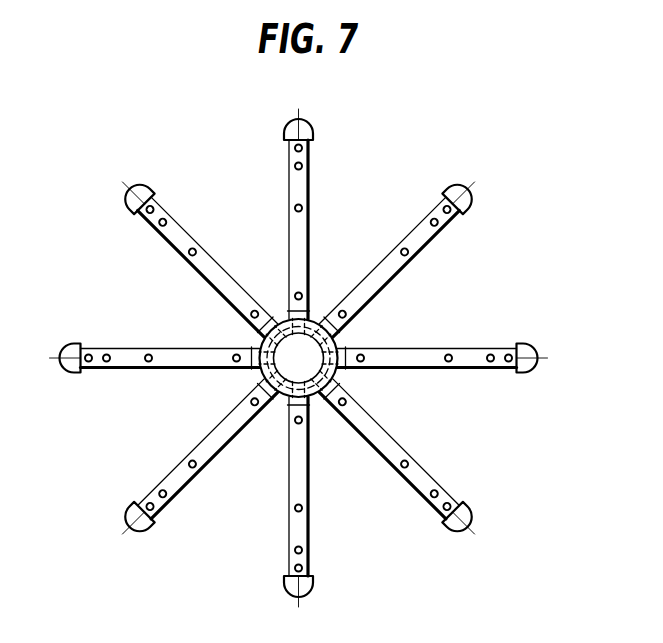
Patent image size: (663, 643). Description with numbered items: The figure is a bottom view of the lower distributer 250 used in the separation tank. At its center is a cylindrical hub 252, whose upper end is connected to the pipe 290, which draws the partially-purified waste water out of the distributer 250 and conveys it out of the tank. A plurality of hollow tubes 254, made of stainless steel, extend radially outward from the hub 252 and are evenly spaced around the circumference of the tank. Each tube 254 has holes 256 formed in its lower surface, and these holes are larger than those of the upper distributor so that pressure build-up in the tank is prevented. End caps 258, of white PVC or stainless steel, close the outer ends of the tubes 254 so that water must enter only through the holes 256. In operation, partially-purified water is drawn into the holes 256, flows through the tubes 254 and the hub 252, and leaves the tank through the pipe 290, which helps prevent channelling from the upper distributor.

The lower distributer 250 is at (405, 312).
The cylindrical hub 252 is at (333, 378).
The hollow tubes 254 is at (306, 307).
The holes 256 is at (303, 163).
The end caps 258 is at (128, 531).
The pipe 290 is at (262, 344).